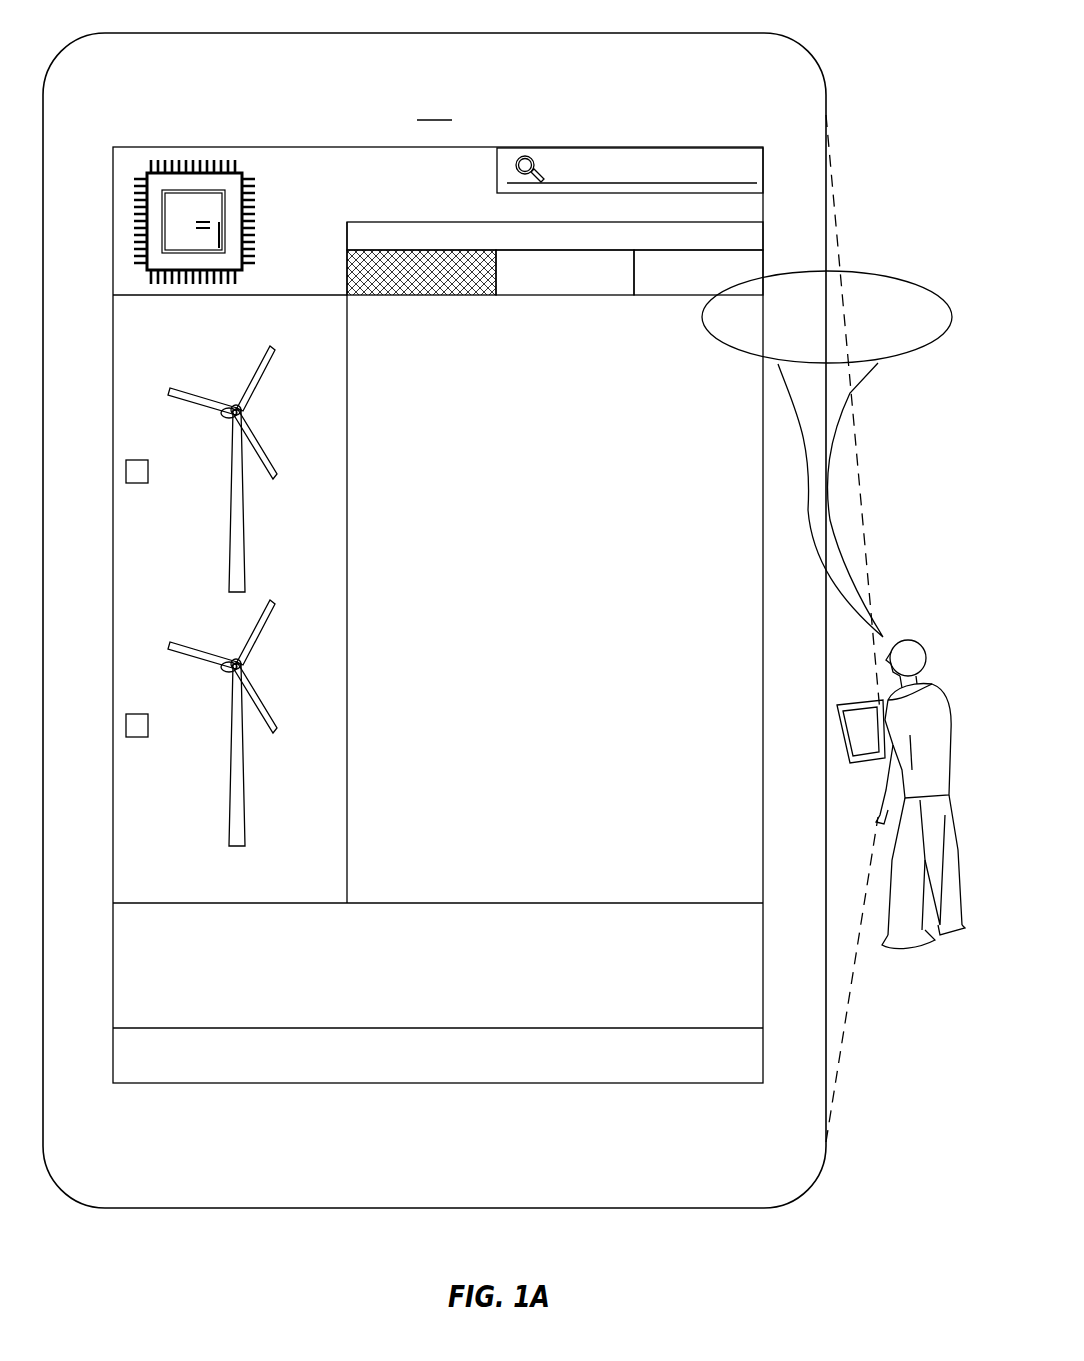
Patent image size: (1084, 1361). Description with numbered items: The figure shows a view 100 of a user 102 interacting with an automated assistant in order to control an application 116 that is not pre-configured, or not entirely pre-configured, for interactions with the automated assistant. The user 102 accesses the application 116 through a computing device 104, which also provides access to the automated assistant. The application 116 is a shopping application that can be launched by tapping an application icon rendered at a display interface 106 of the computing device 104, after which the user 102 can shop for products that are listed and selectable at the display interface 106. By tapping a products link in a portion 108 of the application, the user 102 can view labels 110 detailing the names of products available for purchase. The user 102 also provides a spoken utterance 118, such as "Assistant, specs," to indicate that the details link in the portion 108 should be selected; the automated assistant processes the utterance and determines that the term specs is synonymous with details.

The view 100 is at (850, 84).
The user 102 is at (898, 640).
The computing device 104 is at (840, 757).
The display interface 106 is at (762, 398).
The portion of the application 108 is at (318, 205).
The labels 110 is at (358, 350).
The application 116 is at (456, 993).
The spoken utterance 118 is at (893, 272).